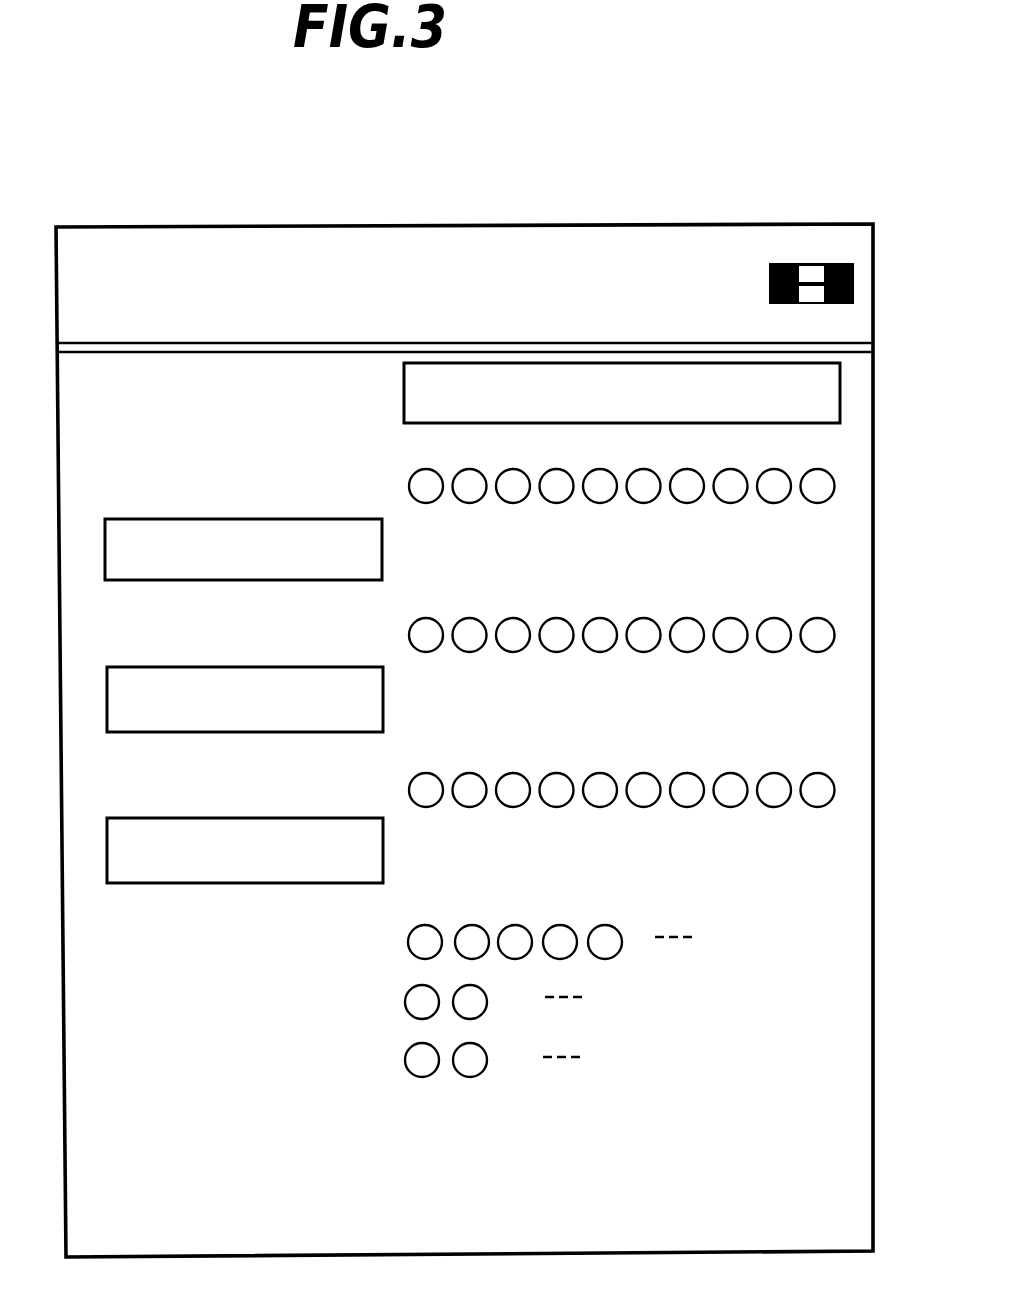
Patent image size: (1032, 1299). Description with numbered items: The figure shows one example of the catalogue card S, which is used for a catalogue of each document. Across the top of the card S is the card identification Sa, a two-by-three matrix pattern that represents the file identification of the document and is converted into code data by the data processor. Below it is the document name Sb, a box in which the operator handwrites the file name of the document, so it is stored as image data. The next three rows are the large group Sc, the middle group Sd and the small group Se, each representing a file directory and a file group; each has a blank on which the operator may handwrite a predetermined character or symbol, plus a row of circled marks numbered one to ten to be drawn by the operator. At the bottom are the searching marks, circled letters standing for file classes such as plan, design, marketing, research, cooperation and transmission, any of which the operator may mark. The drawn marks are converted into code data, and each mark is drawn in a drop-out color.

The catalogue card S is at (525, 227).
The card identification Sa is at (781, 262).
The document name Sb is at (840, 388).
The large group Sc is at (622, 515).
The middle group Sd is at (622, 671).
The small group Se is at (622, 815).